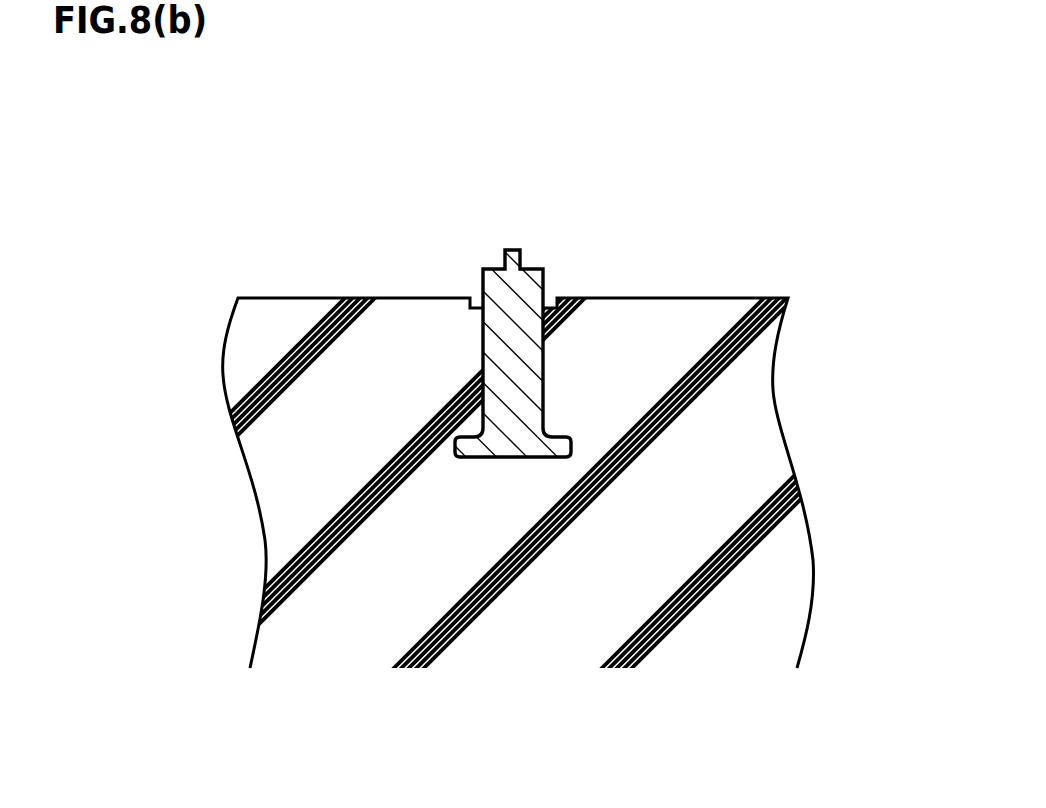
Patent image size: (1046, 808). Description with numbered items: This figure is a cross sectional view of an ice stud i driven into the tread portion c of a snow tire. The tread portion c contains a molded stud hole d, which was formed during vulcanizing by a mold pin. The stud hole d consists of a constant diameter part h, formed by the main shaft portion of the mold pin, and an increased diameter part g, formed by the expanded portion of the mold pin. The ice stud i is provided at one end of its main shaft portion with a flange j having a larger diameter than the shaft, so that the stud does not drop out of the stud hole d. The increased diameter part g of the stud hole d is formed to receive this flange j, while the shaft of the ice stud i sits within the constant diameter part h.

The tread portion c is at (698, 320).
The stud hole d is at (566, 311).
The constant diameter part h is at (566, 300).
The increased diameter part g is at (630, 336).
The ice stud i is at (528, 382).
The flange j is at (558, 447).